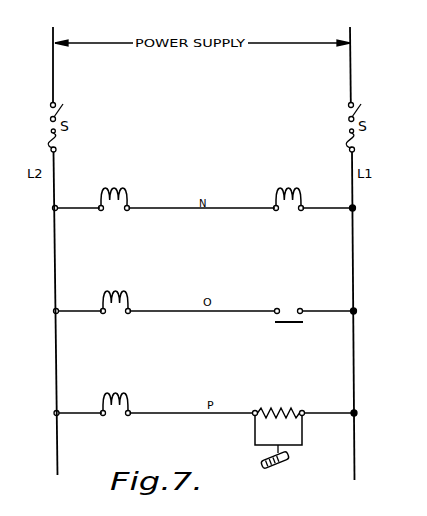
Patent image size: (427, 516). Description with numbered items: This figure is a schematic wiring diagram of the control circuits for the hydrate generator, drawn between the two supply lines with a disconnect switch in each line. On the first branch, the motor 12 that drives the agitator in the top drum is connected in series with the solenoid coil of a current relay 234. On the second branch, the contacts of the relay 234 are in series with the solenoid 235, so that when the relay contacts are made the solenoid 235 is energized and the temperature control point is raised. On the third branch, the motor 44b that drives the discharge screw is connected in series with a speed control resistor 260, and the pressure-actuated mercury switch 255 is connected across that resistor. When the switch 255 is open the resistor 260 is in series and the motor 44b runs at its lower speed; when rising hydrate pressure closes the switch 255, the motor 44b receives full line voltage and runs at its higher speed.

The motor 12 is at (114, 187).
The current relay 234 is at (287, 243).
The solenoid 235 is at (116, 290).
The motor 44b is at (112, 391).
The speed control resistor 260 is at (279, 419).
The mercury switch 255 is at (288, 462).